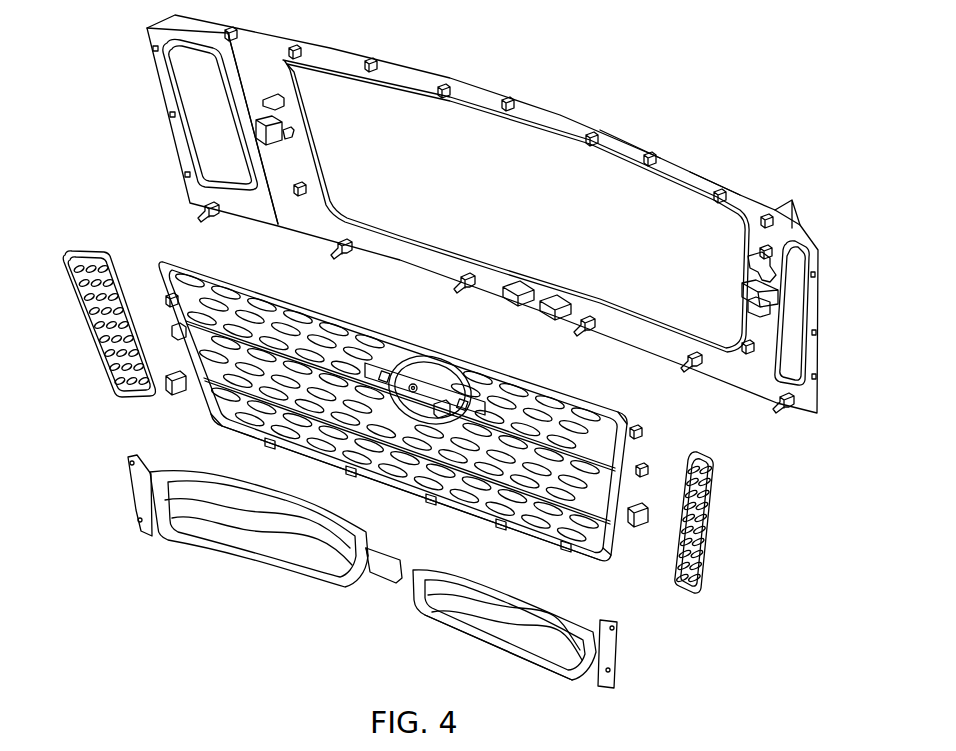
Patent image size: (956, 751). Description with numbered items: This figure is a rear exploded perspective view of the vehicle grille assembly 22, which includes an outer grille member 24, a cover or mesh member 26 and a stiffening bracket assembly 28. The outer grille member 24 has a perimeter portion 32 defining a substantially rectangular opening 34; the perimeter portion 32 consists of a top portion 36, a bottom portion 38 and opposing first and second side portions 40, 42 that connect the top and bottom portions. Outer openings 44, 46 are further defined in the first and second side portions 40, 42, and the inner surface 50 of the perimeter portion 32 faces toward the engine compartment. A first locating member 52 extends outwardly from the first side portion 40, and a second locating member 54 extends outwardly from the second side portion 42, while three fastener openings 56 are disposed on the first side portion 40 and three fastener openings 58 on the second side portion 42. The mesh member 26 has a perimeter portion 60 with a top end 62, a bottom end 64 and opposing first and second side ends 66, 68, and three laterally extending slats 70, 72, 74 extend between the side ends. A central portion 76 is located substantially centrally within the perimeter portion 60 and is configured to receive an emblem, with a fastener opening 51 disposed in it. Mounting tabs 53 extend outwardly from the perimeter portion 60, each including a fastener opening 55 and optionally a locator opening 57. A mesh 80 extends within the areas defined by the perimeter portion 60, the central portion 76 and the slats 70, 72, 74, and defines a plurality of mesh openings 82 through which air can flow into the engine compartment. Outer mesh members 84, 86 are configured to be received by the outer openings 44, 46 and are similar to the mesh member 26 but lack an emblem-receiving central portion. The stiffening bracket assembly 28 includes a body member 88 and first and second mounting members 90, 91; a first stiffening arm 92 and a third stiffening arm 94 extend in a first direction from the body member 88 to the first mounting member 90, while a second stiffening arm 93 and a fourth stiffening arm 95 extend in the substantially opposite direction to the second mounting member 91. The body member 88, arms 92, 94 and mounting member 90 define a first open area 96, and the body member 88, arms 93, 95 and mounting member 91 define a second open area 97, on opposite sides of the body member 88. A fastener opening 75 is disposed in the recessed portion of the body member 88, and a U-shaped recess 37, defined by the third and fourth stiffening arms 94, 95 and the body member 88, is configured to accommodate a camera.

The vehicle grille assembly 22 is at (683, 72).
The outer grille member 24 is at (543, 100).
The mesh member 26 is at (545, 362).
The stiffening bracket assembly 28 is at (552, 668).
The perimeter portion 32 is at (430, 68).
The opening 34 is at (548, 220).
The top portion 36 is at (625, 138).
The U-shaped recess 37 is at (370, 583).
The bottom portion 38 is at (430, 248).
The first side portion 40 is at (748, 306).
The second side portion 42 is at (312, 170).
The outer opening 44 is at (790, 353).
The outer opening 46 is at (200, 86).
The inner surface 50 is at (684, 178).
The fastener opening 51 is at (432, 410).
The first locating member 52 is at (740, 292).
The mounting tab 53 is at (645, 430).
The second locating member 54 is at (293, 130).
The fastener opening 55 is at (190, 390).
The fastener opening 56 is at (800, 270).
The locator opening 57 is at (166, 322).
The fastener opening 58 is at (276, 104).
The perimeter portion 60 is at (478, 340).
The top end 62 is at (342, 295).
The bottom end 64 is at (556, 533).
The first side end 66 is at (642, 475).
The second side end 68 is at (190, 350).
The slat 70 is at (565, 410).
The slat 72 is at (597, 470).
The slat 74 is at (283, 443).
The fastener opening 75 is at (385, 385).
The central portion 76 is at (424, 368).
The mesh 80 is at (225, 393).
The mesh opening 82 is at (205, 283).
The outer mesh member 84 is at (706, 560).
The outer mesh member 86 is at (95, 340).
The body member 88 is at (385, 580).
The first mounting member 90 is at (616, 672).
The second mounting member 91 is at (138, 528).
The first stiffening arm 92 is at (440, 590).
The second stiffening arm 93 is at (272, 522).
The third stiffening arm 94 is at (518, 652).
The fourth stiffening arm 95 is at (302, 578).
The first open area 96 is at (475, 610).
The second open area 97 is at (176, 512).